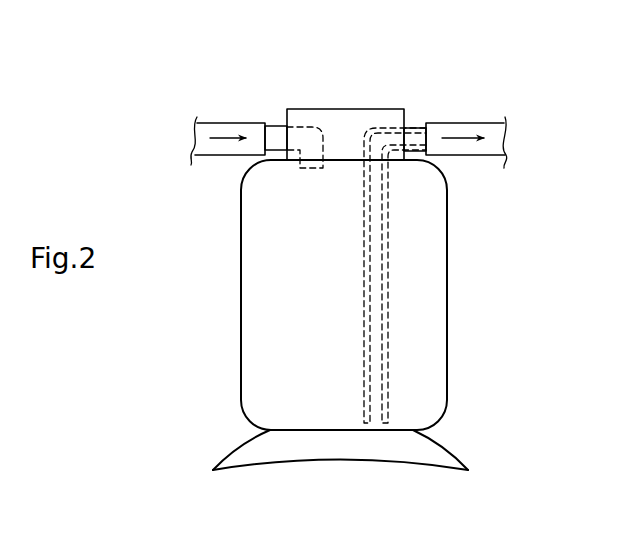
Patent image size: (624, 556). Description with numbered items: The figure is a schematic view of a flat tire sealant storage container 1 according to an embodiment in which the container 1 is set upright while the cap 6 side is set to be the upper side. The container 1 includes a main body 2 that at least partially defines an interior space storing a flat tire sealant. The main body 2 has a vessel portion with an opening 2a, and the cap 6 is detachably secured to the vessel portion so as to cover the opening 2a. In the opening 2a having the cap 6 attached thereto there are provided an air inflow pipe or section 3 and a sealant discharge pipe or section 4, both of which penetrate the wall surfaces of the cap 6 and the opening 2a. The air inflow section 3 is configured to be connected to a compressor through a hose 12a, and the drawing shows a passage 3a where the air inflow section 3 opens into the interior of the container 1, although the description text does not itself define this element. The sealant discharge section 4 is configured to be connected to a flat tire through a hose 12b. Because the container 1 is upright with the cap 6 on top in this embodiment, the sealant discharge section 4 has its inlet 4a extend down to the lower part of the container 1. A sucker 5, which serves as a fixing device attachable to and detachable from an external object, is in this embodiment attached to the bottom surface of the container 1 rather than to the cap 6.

The container 1 is at (504, 202).
The main body 2 is at (447, 352).
The opening 2a is at (338, 159).
The air inflow pipe or section 3 is at (277, 127).
The inlet passage 3a is at (313, 170).
The sealant discharge pipe or section 4 is at (412, 128).
The inlet 4a is at (385, 411).
The sucker 5 is at (447, 469).
The cap 6 is at (325, 108).
The hose 12a is at (215, 127).
The hose 12b is at (468, 128).